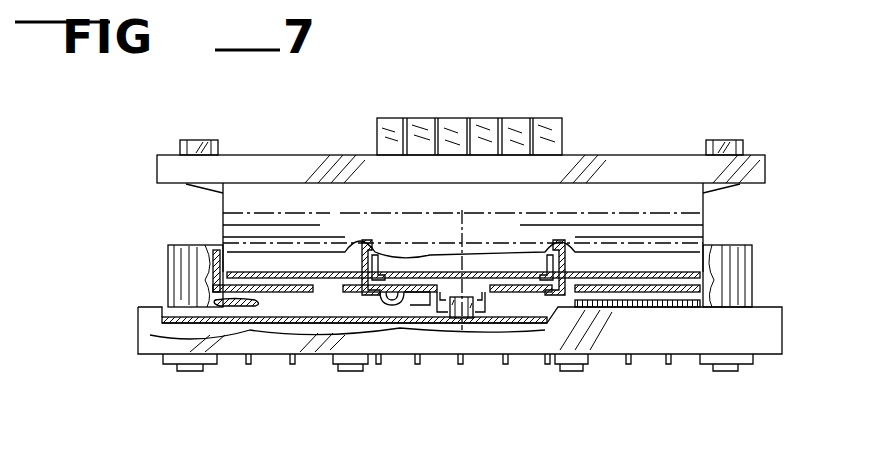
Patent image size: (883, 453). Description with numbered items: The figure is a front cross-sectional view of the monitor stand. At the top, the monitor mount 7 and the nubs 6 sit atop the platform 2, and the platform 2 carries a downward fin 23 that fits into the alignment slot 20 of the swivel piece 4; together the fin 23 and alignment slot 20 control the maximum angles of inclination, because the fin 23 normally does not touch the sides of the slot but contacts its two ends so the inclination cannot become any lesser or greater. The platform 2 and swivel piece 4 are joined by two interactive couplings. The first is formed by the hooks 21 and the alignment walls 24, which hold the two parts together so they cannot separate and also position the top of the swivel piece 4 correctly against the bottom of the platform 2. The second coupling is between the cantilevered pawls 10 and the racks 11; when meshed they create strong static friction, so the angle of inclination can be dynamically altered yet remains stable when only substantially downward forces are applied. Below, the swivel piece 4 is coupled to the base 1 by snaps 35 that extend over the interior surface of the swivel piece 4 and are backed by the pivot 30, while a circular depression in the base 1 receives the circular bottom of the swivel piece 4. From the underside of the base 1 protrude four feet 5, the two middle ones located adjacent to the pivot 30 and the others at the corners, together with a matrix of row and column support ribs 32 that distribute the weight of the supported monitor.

The base 1 is at (773, 331).
The platform 2 is at (178, 177).
The swivel piece 4 is at (190, 273).
The feet 5 is at (190, 372).
The nubs 6 is at (210, 150).
The monitor mount 7 is at (479, 130).
The cantilevered pawls 10 is at (328, 285).
The racks 11 is at (325, 245).
The alignment slot 20 is at (393, 305).
The hooks 21 is at (362, 258).
The fin 23 is at (395, 280).
The alignment walls 24 is at (378, 277).
The pivot 30 is at (462, 302).
The support ribs 32 is at (249, 366).
The snaps 35 is at (495, 310).